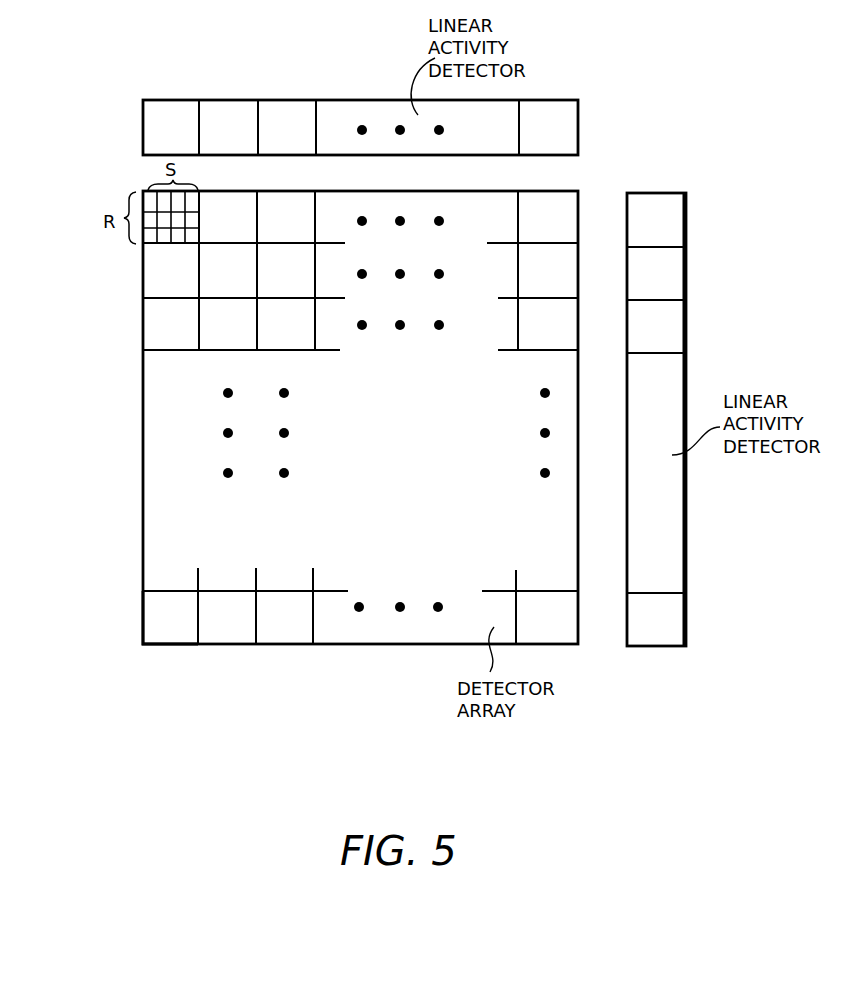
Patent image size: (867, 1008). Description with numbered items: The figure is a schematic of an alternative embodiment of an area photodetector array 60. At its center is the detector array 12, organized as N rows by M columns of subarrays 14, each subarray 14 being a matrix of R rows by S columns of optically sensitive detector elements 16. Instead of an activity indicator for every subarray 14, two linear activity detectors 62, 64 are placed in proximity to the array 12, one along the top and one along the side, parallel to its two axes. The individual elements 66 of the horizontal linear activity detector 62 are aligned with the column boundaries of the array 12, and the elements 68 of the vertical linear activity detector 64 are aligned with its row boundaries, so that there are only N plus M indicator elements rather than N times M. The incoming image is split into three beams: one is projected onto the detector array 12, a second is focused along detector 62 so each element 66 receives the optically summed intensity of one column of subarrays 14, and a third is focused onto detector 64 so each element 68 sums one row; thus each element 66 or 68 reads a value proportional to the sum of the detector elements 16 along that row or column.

The detector array 12 is at (140, 463).
The subarray 14 is at (143, 635).
The detector element 16 is at (143, 248).
The area photodetector array 60 is at (298, 716).
The linear activity detector 62 is at (145, 99).
The linear activity detector 64 is at (689, 193).
The activity detector element 66 is at (188, 108).
The activity detector element 68 is at (672, 237).